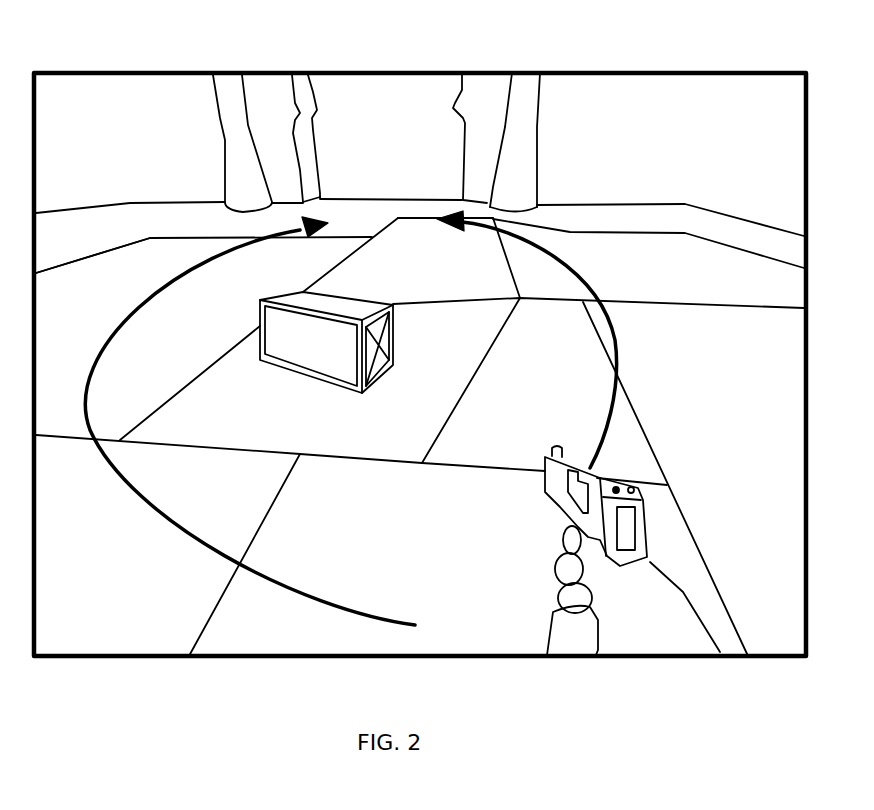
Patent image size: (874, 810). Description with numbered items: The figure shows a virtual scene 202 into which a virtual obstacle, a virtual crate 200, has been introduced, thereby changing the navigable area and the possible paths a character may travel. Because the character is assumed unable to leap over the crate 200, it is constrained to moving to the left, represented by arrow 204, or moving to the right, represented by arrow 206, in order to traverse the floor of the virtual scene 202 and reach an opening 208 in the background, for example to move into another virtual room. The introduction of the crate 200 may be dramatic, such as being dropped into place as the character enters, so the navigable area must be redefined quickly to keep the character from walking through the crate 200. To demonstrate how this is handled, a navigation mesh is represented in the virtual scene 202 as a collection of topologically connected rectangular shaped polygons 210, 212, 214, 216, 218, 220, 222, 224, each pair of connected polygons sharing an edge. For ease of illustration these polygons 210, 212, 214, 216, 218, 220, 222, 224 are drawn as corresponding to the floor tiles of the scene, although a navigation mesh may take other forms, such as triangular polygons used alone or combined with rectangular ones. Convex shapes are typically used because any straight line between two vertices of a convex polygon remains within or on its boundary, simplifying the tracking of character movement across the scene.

The virtual crate 200 is at (373, 301).
The virtual scene 202 is at (806, 73).
The arrow 204 is at (175, 292).
The arrow 206 is at (618, 340).
The opening 208 is at (405, 173).
The rectangular shaped polygon 210 is at (78, 651).
The rectangular shaped polygon 212 is at (245, 651).
The rectangular shaped polygon 214 is at (786, 644).
The rectangular shaped polygon 216 is at (68, 428).
The rectangular shaped polygon 218 is at (194, 428).
The rectangular shaped polygon 220 is at (468, 458).
The rectangular shaped polygon 222 is at (508, 298).
The rectangular shaped polygon 224 is at (555, 298).